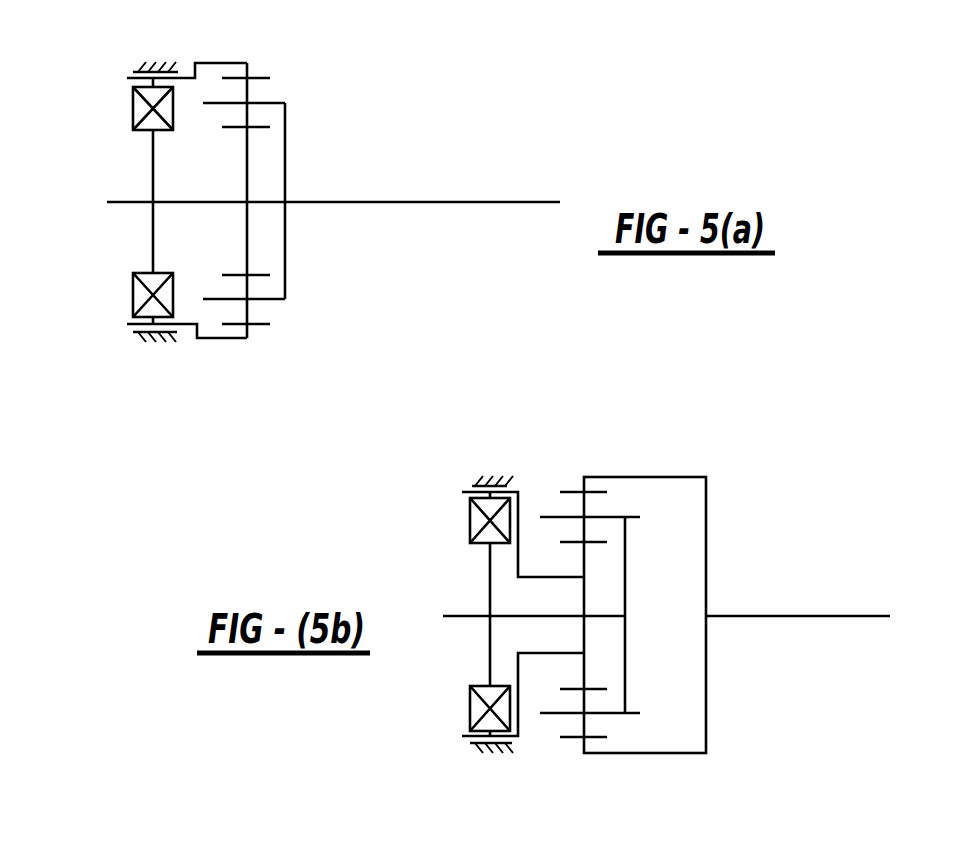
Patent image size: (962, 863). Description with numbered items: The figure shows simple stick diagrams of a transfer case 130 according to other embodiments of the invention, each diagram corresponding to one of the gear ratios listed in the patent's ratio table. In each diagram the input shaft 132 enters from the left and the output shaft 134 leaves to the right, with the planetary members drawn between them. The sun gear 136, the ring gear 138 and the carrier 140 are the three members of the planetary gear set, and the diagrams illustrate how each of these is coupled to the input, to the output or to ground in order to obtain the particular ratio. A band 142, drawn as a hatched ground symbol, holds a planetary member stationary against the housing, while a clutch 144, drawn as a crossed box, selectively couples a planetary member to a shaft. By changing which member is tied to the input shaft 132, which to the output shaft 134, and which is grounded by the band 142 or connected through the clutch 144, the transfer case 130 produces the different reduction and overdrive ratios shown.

In FIG. 5A, the transfer case 130 is at (371, 86).
In FIG. 5B, the transfer case 130 is at (752, 418).
In FIG. 5A, the input shaft 132 is at (113, 202).
In FIG. 5B, the input shaft 132 is at (462, 616).
In FIG. 5A, the output shaft 134 is at (507, 202).
In FIG. 5B, the output shaft 134 is at (803, 616).
In FIG. 5A, the sun gear 136 is at (247, 233).
In FIG. 5B, the sun gear 136 is at (585, 662).
In FIG. 5A, the ring gear 138 is at (227, 63).
In FIG. 5B, the ring gear 138 is at (706, 546).
In FIG. 5A, the carrier 140 is at (286, 158).
In FIG. 5B, the carrier 140 is at (627, 567).
In FIG. 5A, the band 142 is at (165, 342).
In FIG. 5B, the band 142 is at (500, 753).
In FIG. 5A, the clutch 144 is at (133, 108).
In FIG. 5B, the clutch 144 is at (470, 708).